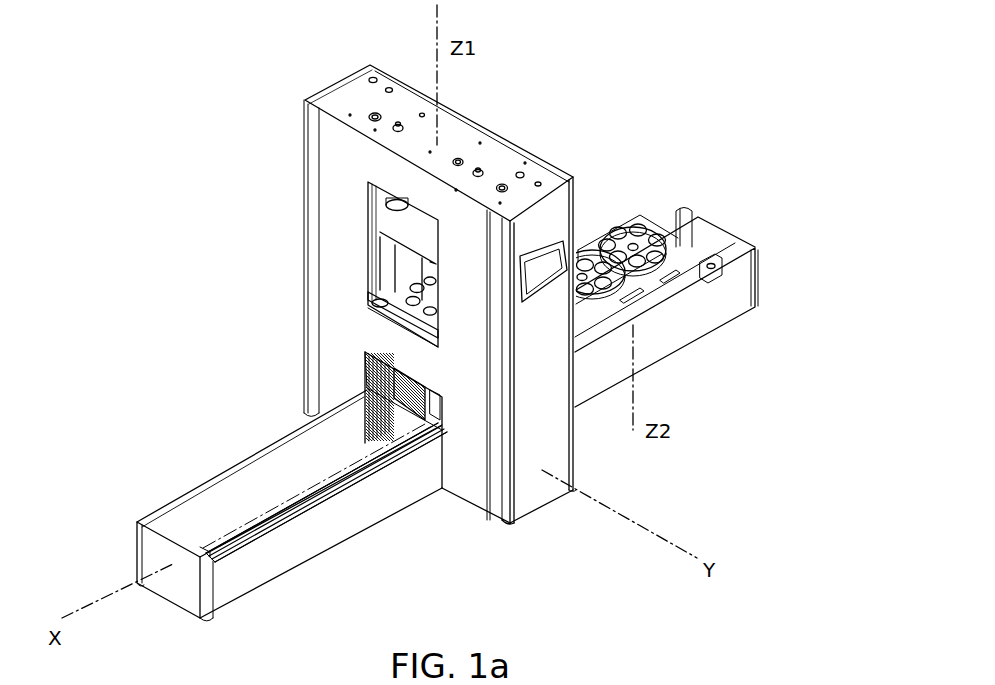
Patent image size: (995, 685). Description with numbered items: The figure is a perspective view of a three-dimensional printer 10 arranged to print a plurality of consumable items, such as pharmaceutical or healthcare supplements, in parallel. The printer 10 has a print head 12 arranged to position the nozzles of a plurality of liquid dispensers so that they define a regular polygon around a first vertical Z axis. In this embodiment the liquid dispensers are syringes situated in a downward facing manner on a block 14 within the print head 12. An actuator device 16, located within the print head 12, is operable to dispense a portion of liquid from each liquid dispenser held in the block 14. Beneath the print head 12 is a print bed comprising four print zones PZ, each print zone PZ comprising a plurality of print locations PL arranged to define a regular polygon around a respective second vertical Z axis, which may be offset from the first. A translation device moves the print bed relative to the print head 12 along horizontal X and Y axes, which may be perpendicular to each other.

The 3D printer 10 is at (470, 316).
The print head 12 is at (389, 294).
The block 14 is at (394, 294).
The actuator device 16 is at (405, 227).
The print location PL is at (662, 240).
The print zone PZ is at (623, 215).